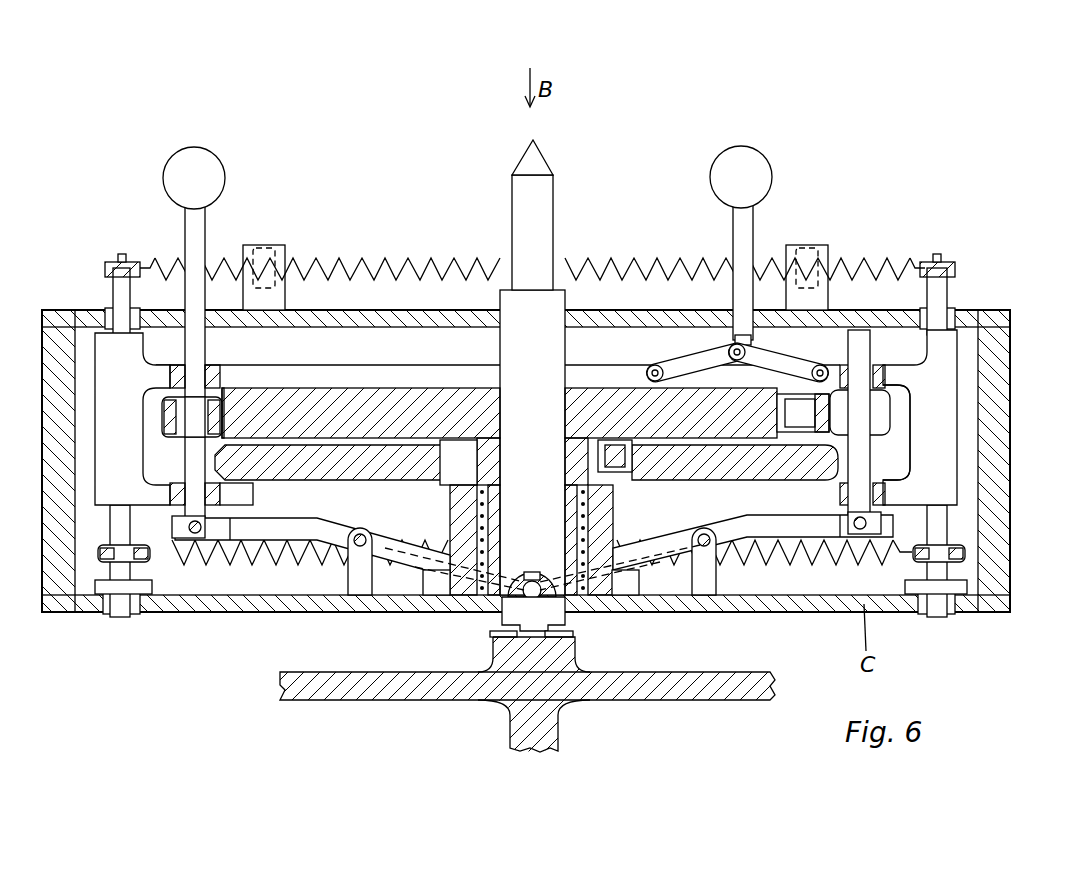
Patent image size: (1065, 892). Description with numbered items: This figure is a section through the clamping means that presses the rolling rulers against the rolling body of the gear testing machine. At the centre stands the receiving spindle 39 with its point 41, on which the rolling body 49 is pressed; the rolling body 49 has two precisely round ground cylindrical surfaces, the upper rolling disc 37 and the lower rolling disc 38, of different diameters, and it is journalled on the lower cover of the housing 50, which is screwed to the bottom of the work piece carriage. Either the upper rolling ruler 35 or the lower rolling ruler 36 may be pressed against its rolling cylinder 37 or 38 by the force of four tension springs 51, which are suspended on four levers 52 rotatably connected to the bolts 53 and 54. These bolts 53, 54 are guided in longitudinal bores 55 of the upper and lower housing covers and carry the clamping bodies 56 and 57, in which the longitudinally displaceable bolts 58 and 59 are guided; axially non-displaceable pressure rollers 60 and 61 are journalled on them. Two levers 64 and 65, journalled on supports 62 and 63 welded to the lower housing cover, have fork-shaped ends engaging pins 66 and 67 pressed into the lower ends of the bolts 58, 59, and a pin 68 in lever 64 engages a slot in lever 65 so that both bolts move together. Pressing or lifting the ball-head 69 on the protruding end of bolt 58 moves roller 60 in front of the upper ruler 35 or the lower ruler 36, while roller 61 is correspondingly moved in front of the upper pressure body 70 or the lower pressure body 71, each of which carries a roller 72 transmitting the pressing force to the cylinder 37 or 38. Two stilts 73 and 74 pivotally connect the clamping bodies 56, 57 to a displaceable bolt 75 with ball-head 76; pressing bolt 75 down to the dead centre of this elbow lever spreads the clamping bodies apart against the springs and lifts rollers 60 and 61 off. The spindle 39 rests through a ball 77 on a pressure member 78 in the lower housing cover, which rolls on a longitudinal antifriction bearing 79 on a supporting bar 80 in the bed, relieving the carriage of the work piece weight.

The rolling ruler 35 is at (258, 418).
The rolling ruler 36 is at (365, 458).
The rolling disc 37 is at (280, 410).
The rolling disc 38 is at (462, 468).
The receiving spindle 39 is at (557, 296).
The point 41 is at (541, 165).
The rolling body 49 is at (487, 398).
The housing 50 is at (995, 500).
The tension spring 51 is at (860, 257).
The lever 52 is at (110, 268).
The bolt 53 is at (118, 298).
The bolt 54 is at (940, 300).
The longitudinal bore 55 is at (138, 318).
The clamping body 56 is at (100, 360).
The clamping body 57 is at (940, 360).
The bolt 58 is at (185, 222).
The bolt 59 is at (862, 352).
The pressure roller 60 is at (162, 415).
The pressure roller 61 is at (878, 407).
The support 62 is at (365, 580).
The support 63 is at (706, 580).
The lever 64 is at (435, 574).
The lever 65 is at (797, 532).
The pin 66 is at (193, 536).
The pin 67 is at (868, 523).
The pin 68 is at (533, 572).
The ball-head 69 is at (203, 176).
The pressure body 70 is at (835, 432).
The pressure body 71 is at (812, 456).
The roller 72 is at (780, 410).
The stilt 73 is at (682, 362).
The stilt 74 is at (778, 362).
The bolt 75 is at (740, 242).
The ball-head 76 is at (753, 166).
The ball 77 is at (541, 596).
The pressure member 78 is at (510, 617).
The longitudinal antifriction bearing 79 is at (485, 690).
The supporting bar 80 is at (580, 694).